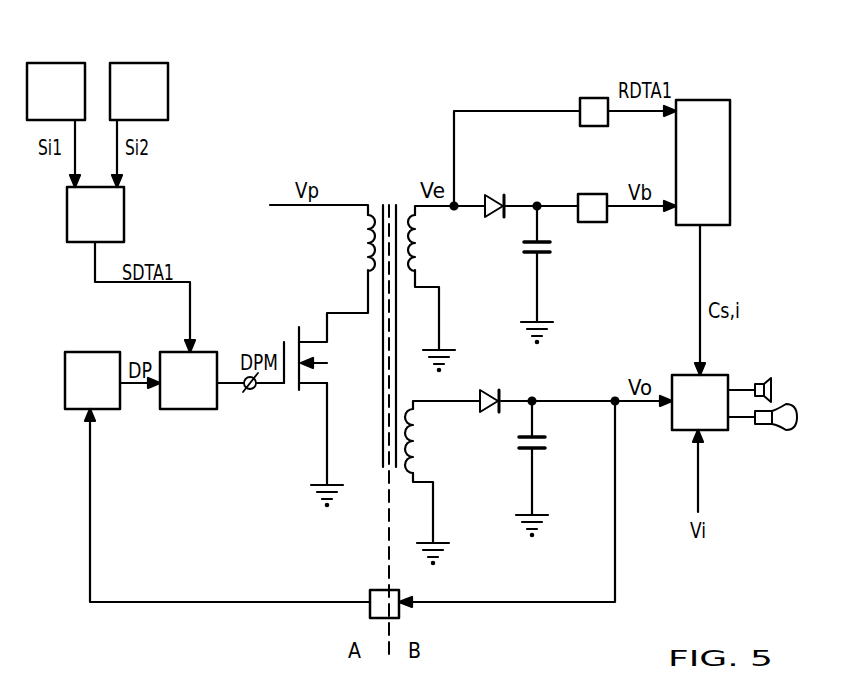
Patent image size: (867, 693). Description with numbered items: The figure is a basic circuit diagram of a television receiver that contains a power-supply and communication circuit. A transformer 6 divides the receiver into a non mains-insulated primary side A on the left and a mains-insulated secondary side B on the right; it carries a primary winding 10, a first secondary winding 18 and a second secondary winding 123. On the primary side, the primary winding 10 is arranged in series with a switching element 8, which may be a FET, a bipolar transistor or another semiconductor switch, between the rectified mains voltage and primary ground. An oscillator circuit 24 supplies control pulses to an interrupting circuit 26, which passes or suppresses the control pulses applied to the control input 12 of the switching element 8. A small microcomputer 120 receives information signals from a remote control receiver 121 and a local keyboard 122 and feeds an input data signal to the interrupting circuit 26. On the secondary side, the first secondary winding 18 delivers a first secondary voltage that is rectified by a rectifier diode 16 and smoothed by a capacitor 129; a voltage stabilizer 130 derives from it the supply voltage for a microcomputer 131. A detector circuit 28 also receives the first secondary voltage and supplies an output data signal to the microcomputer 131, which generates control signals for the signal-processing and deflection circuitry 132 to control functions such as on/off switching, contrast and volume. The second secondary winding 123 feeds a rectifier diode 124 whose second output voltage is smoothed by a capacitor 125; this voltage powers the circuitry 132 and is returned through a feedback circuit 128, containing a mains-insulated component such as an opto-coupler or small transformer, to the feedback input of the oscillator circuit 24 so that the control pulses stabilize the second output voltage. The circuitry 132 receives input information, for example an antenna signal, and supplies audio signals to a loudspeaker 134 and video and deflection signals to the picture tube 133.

The remote control receiver 121 is at (61, 62).
The local keyboard 122 is at (138, 62).
The small microcomputer 120 is at (125, 220).
The oscillator circuit 24 is at (87, 351).
The interrupting circuit 26 is at (208, 351).
The control input 12 is at (249, 393).
The switching element 8 is at (290, 340).
The primary winding 10 is at (356, 243).
The transformer 6 is at (391, 204).
The first secondary winding 18 is at (428, 243).
The second secondary winding 123 is at (427, 441).
The rectifier diode 16 is at (492, 197).
The capacitor 129 is at (522, 248).
The rectifier diode 124 is at (483, 392).
The capacitor 125 is at (517, 444).
The detector circuit 28 is at (593, 97).
The voltage stabilizer 130 is at (593, 223).
The microcomputer 131 is at (705, 99).
The signal-processing and deflection circuitry 132 is at (676, 373).
The loudspeaker 134 is at (763, 382).
The picture tube 133 is at (765, 431).
The feedback circuit 128 is at (375, 590).